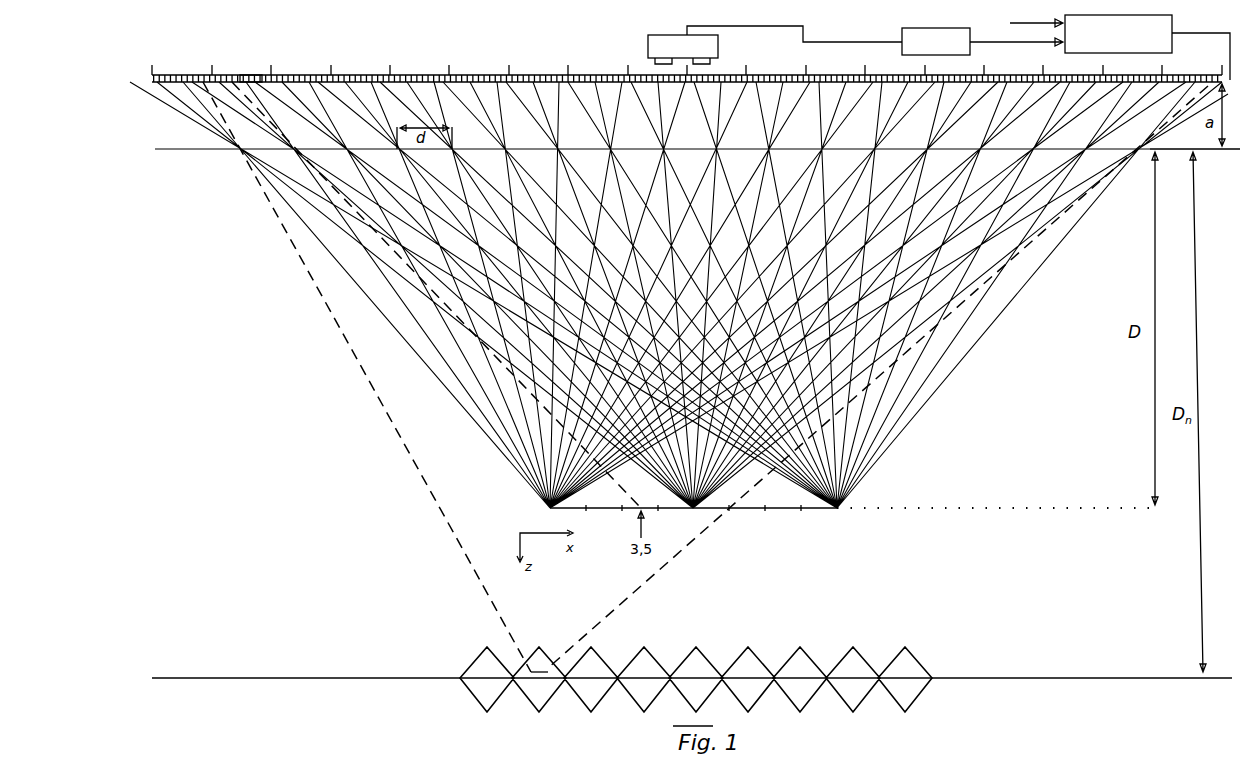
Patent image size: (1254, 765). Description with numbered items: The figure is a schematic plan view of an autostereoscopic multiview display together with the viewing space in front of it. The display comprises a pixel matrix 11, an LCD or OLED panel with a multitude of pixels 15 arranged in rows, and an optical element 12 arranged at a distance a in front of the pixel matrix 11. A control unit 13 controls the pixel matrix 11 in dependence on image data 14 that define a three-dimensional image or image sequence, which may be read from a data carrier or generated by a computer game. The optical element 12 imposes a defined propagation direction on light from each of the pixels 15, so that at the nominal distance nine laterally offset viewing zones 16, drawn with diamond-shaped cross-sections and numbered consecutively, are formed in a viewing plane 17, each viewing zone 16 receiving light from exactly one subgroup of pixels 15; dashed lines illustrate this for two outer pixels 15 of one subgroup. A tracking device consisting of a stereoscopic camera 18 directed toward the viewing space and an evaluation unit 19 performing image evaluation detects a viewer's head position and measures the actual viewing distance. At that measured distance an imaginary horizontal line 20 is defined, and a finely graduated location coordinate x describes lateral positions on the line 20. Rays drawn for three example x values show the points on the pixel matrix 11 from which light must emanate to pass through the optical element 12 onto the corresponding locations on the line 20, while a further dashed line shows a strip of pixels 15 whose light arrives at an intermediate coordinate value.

The pixel matrix 11 is at (152, 76).
The optical element 12 is at (240, 152).
The control unit 13 is at (1176, 19).
The image data 14 is at (1015, 21).
The pixels 15 is at (257, 72).
The viewing zones 16 is at (474, 663).
The viewing plane 17 is at (1188, 674).
The stereoscopic camera 18 is at (648, 35).
The evaluation unit 19 is at (972, 47).
The imaginary line 20 is at (820, 511).